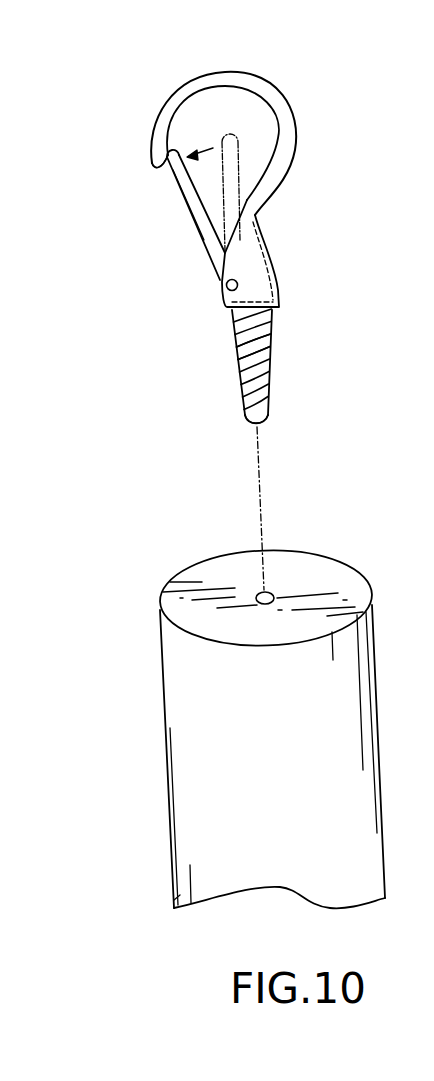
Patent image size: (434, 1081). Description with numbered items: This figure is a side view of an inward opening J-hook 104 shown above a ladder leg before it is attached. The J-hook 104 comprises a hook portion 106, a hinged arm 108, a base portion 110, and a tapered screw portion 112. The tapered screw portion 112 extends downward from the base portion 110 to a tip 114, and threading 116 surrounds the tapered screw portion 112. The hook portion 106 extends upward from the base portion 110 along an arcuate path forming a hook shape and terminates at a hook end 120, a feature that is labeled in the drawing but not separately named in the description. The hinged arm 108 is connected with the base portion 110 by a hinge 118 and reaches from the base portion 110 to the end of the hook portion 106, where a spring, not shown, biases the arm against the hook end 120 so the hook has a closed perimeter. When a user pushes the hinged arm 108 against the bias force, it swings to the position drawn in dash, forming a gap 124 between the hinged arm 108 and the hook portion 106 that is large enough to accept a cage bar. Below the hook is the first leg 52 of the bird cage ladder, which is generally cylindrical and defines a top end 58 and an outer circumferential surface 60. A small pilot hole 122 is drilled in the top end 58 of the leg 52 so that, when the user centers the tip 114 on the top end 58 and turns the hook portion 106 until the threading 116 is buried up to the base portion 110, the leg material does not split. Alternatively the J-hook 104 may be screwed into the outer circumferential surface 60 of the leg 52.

The inward opening J-hook 104 is at (132, 82).
The hook portion 106 is at (261, 85).
The hinged arm 108 is at (197, 220).
The base portion 110 is at (253, 265).
The tapered screw portion 112 is at (234, 350).
The tip 114 is at (267, 421).
The threading 116 is at (272, 354).
The hinge 118 is at (226, 289).
The hook tip 120 is at (156, 163).
The pilot hole 122 is at (272, 593).
The gap 124 is at (203, 175).
The first leg 52 is at (160, 736).
The top end 58 is at (218, 572).
The outer circumferential surface 60 is at (203, 842).